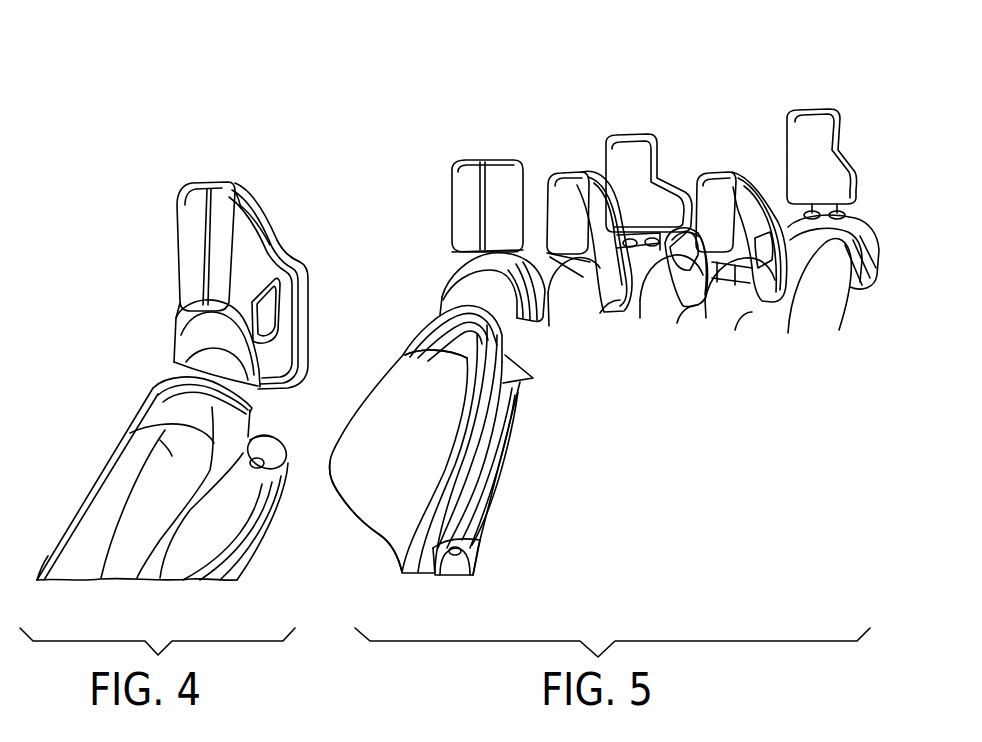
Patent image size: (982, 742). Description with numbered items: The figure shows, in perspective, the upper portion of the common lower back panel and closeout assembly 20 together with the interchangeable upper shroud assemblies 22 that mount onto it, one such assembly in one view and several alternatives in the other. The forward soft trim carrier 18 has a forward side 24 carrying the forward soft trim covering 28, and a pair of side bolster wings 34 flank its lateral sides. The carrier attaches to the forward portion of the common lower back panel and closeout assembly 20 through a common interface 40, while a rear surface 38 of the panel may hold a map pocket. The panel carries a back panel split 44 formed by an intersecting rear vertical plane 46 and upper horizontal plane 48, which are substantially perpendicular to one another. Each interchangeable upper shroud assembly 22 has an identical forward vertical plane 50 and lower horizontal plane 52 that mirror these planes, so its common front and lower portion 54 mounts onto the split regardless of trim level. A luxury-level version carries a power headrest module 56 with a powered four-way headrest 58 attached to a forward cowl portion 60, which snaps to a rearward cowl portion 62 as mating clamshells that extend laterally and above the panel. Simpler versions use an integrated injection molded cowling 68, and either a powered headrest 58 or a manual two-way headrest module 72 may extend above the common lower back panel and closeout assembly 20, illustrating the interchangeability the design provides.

In FIG. 4, the forward soft trim carrier 18 is at (128, 517).
In FIG. 5, the forward soft trim carrier 18 is at (378, 514).
In FIG. 4, the common lower back panel and closeout assembly 20 is at (240, 561).
In FIG. 5, the common lower back panel and closeout assembly 20 is at (482, 464).
In FIG. 4, the interchangeable upper shroud assembly 22 is at (292, 186).
In FIG. 5, the interchangeable upper shroud assembly 22 is at (498, 126).
In FIG. 4, the forward side 24 is at (150, 497).
In FIG. 5, the forward side 24 is at (369, 424).
In FIG. 4, the forward soft trim covering 28 is at (47, 558).
In FIG. 5, the forward soft trim covering 28 is at (352, 496).
In FIG. 4, the side bolster wing 34 is at (60, 569).
In FIG. 4, the rear surface 38 is at (275, 505).
In FIG. 5, the rear surface 38 is at (490, 504).
In FIG. 4, the common interface 40 is at (260, 454).
In FIG. 5, the common interface 40 is at (485, 426).
In FIG. 4, the back panel split 44 is at (250, 448).
In FIG. 5, the back panel split 44 is at (533, 376).
In FIG. 4, the rear vertical plane 46 is at (240, 403).
In FIG. 5, the rear vertical plane 46 is at (455, 314).
In FIG. 4, the upper horizontal plane 48 is at (167, 438).
In FIG. 5, the upper horizontal plane 48 is at (543, 389).
In FIG. 4, the forward vertical plane 50 is at (227, 338).
In FIG. 5, the forward vertical plane 50 is at (470, 255).
In FIG. 4, the lower horizontal plane 52 is at (285, 327).
In FIG. 5, the lower horizontal plane 52 is at (527, 307).
In FIG. 4, the common front and lower portion 54 is at (220, 347).
In FIG. 5, the common front and lower portion 54 is at (600, 313).
In FIG. 4, the power headrest module 56 is at (236, 203).
In FIG. 5, the power headrest module 56 is at (507, 175).
In FIG. 4, the powered four-way headrest 58 is at (186, 246).
In FIG. 5, the powered four-way headrest 58 is at (461, 175).
In FIG. 4, the forward cowl portion 60 is at (243, 229).
In FIG. 4, the rearward cowl portion 62 is at (298, 266).
In FIG. 5, the integrated injection molded cowling 68 is at (513, 301).
In FIG. 5, the manual two-way headrest module 72 is at (622, 153).